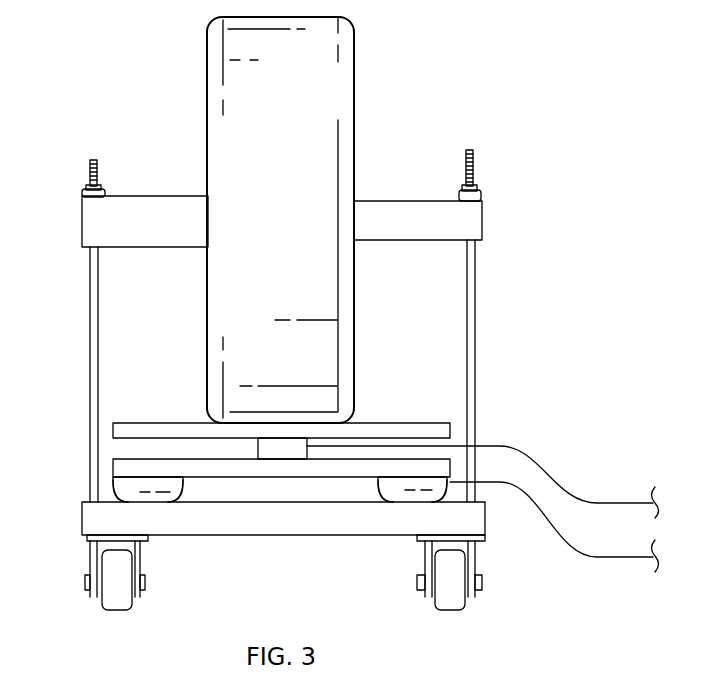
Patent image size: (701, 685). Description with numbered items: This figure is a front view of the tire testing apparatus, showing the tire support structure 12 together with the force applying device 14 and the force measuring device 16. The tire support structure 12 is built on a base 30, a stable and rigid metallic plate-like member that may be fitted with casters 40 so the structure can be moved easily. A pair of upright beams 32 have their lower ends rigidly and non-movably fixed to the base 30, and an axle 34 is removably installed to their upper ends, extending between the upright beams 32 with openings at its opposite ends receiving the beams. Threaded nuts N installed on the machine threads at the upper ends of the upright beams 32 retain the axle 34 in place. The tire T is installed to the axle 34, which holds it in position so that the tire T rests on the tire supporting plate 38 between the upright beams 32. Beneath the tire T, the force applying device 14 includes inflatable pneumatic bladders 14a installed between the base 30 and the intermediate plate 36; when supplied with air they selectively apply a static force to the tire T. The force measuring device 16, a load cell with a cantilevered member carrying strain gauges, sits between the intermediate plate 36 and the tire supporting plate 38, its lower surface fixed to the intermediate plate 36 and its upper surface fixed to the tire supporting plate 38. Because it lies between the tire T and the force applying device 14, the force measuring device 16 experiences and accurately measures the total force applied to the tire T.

The tire support structure 12 is at (512, 65).
The tire T is at (243, 148).
The threaded nuts N is at (86, 185).
The axle 34 is at (403, 218).
The upright beams 32 is at (93, 340).
The tire supporting plate 38 is at (398, 428).
The force measuring device 16 is at (283, 443).
The intermediate plate 36 is at (125, 468).
The force applying device 14 is at (110, 488).
The inflatable pneumatic bladders 14a is at (186, 481).
The base 30 is at (100, 520).
The casters 40 is at (105, 598).